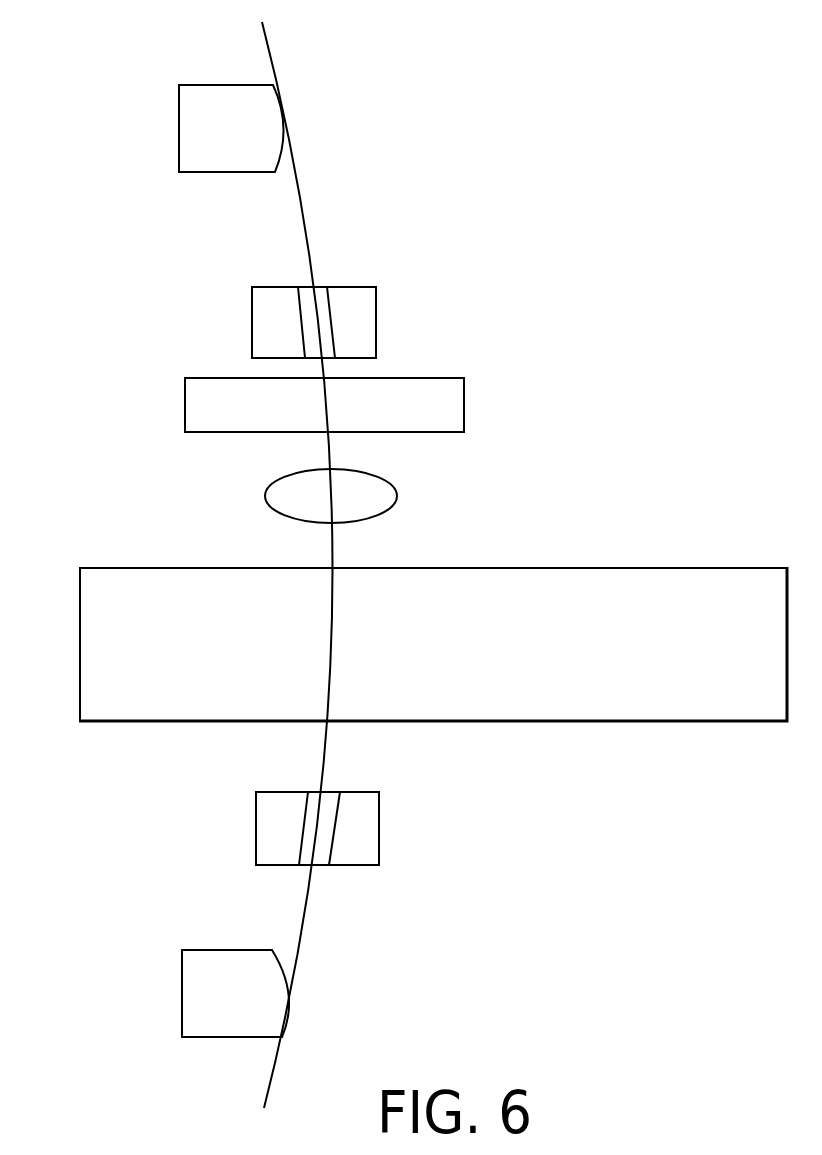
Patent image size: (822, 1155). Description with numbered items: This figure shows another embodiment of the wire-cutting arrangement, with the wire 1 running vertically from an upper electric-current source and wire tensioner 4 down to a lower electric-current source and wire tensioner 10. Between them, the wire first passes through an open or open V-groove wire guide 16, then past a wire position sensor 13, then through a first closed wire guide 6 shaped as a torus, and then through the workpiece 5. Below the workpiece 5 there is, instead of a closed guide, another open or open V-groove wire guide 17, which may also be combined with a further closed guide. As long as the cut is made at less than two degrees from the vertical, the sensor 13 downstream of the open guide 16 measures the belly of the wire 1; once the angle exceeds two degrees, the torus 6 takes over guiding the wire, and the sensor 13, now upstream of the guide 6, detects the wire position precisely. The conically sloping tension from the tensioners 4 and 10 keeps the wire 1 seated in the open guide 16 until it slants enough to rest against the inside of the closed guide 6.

The wire 1 is at (278, 88).
The electric-current source and wire tensioner 4 is at (207, 122).
The open V-groove wire guide 16 is at (368, 290).
The wire position sensor 13 is at (392, 400).
The first closed wire guide 6 is at (395, 485).
The workpiece 5 is at (145, 628).
The open V-groove wire guide 17 is at (360, 823).
The electric-current source and wire tensioner 10 is at (232, 1000).